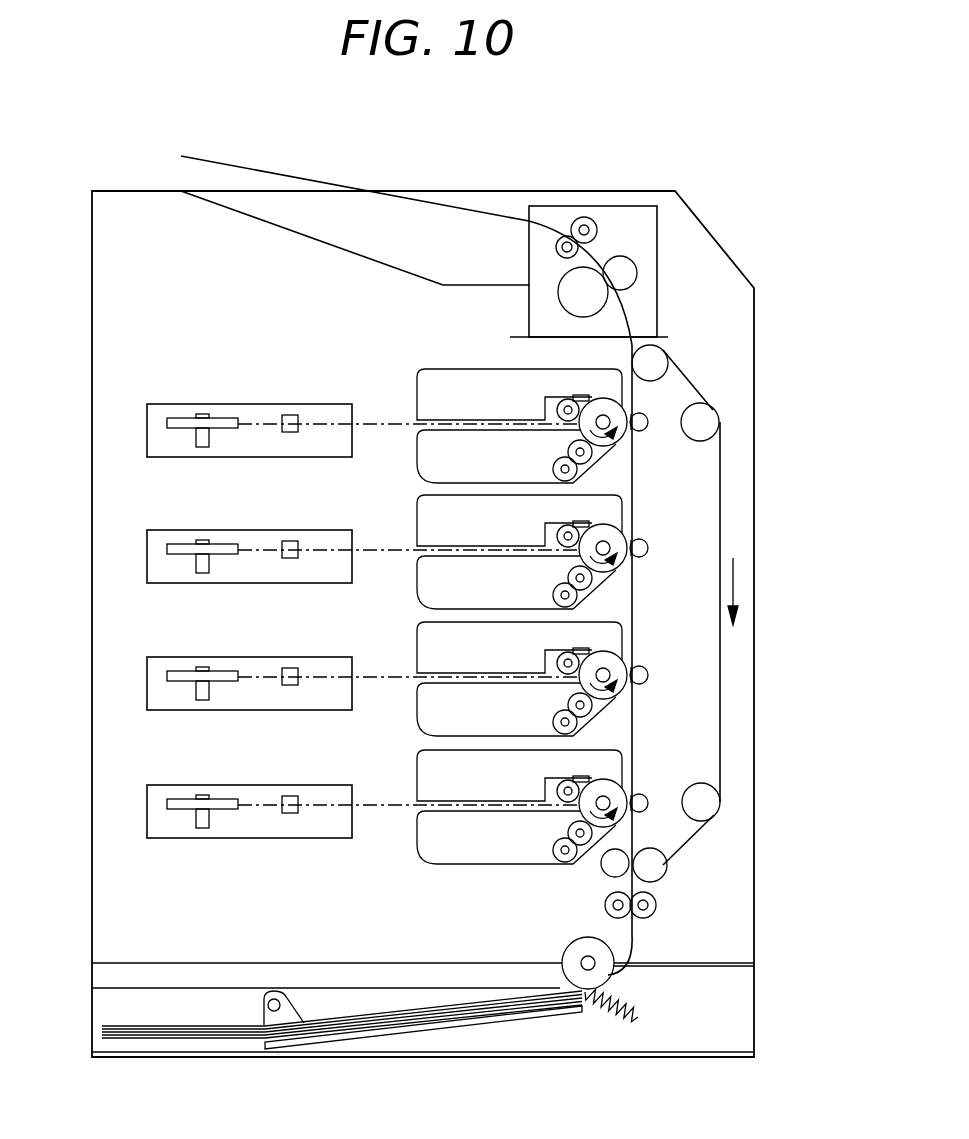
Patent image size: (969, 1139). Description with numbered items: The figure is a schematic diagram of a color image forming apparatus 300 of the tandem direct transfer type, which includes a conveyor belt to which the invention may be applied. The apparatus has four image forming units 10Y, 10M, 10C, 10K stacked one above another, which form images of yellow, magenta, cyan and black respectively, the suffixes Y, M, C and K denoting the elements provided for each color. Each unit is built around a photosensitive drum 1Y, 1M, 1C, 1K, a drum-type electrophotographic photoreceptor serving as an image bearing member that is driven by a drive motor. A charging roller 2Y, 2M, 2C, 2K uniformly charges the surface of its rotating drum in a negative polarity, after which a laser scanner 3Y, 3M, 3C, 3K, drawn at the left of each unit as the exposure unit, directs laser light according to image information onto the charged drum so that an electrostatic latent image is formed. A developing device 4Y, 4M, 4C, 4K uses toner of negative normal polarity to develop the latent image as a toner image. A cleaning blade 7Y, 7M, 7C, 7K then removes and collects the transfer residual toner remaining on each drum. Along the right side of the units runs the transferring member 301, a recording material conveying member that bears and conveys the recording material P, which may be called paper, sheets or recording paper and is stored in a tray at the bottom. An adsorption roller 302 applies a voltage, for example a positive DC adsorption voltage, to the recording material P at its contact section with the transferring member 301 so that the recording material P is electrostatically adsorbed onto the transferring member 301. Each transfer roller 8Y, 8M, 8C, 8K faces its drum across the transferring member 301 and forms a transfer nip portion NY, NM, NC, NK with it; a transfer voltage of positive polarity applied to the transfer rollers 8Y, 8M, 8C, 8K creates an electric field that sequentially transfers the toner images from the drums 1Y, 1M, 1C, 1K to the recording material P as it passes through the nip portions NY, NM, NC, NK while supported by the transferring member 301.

The color image forming apparatus 300 is at (518, 140).
The transferring member 301 is at (720, 678).
The adsorption roller 302 is at (613, 872).
The recording material P is at (237, 1027).
The image forming unit 10K is at (138, 417).
The image forming unit 10C is at (187, 548).
The image forming unit 10M is at (186, 675).
The image forming unit 10Y is at (187, 803).
The laser scanner 3K is at (158, 442).
The laser scanner 3C is at (308, 570).
The laser scanner 3M is at (307, 697).
The laser scanner 3Y is at (308, 825).
The developing device 4K is at (417, 455).
The developing device 4C is at (492, 562).
The developing device 4M is at (492, 689).
The developing device 4Y is at (492, 817).
The charging roller 2K is at (556, 410).
The charging roller 2C is at (518, 532).
The charging roller 2M is at (517, 659).
The charging roller 2Y is at (518, 787).
The cleaning blade 7K is at (575, 396).
The cleaning blade 7C is at (547, 513).
The cleaning blade 7M is at (546, 640).
The cleaning blade 7Y is at (547, 768).
The photosensitive drum 1K is at (619, 409).
The photosensitive drum 1C is at (629, 542).
The photosensitive drum 1M is at (631, 669).
The photosensitive drum 1Y is at (631, 793).
The transfer roller 8K is at (645, 430).
The transfer roller 8C is at (661, 568).
The transfer roller 8M is at (663, 695).
The transfer roller 8Y is at (658, 821).
The transfer nip portion NK is at (634, 438).
The transfer nip portion NC is at (650, 586).
The transfer nip portion NM is at (652, 713).
The transfer nip portion NY is at (662, 856).